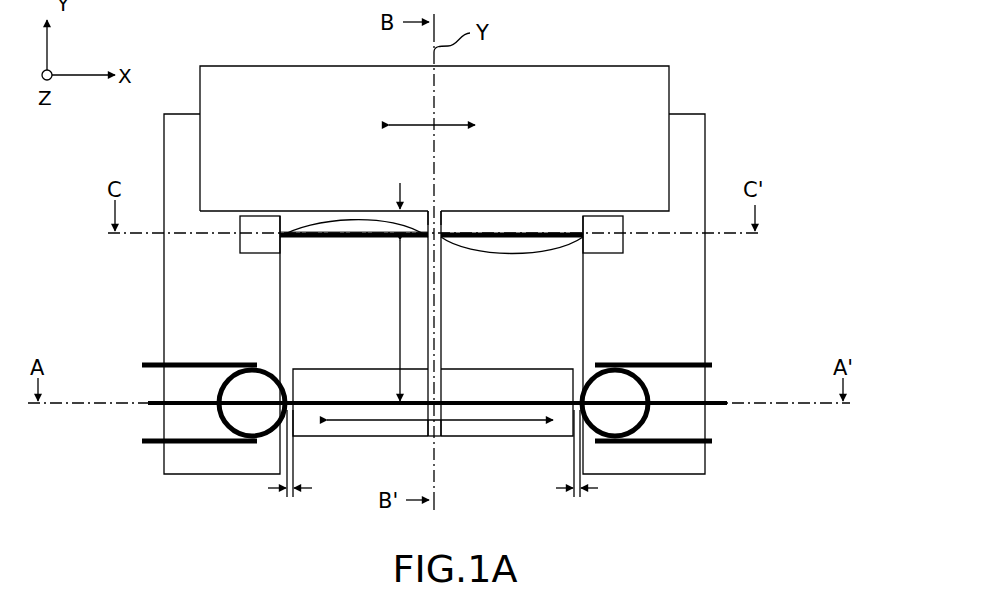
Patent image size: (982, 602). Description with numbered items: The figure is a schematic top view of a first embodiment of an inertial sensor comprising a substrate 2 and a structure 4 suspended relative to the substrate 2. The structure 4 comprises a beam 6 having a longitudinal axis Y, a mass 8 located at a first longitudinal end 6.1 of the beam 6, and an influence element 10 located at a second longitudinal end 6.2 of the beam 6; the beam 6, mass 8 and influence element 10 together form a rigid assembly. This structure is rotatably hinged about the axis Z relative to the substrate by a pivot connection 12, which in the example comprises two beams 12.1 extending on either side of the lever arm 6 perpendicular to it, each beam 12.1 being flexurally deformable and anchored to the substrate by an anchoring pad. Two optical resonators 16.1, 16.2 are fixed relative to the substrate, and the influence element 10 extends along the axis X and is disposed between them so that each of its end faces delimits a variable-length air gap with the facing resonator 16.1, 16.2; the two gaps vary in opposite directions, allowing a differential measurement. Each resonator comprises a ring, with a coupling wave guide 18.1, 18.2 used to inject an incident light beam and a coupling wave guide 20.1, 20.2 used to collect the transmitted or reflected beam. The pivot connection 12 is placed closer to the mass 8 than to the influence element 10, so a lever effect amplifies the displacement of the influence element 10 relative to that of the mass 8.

The substrate 2 is at (694, 150).
The structure 4 is at (591, 54).
The beam 6 is at (441, 328).
The first longitudinal end 6.1 is at (436, 211).
The second longitudinal end 6.2 is at (436, 437).
The mass 8 is at (667, 90).
The influence element 10 is at (542, 370).
The pivot connection 12 is at (422, 242).
The beams 12.1 is at (310, 238).
The optical resonator 16.1 is at (645, 388).
The optical resonator 16.2 is at (222, 388).
The coupling wave guide 18.1 is at (706, 362).
The coupling wave guide 18.2 is at (153, 362).
The coupling wave guide 20.1 is at (702, 447).
The coupling wave guide 20.2 is at (156, 447).